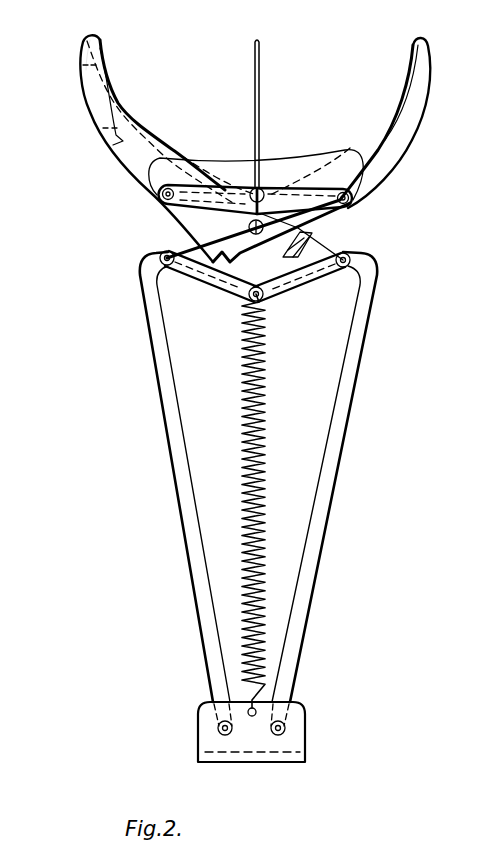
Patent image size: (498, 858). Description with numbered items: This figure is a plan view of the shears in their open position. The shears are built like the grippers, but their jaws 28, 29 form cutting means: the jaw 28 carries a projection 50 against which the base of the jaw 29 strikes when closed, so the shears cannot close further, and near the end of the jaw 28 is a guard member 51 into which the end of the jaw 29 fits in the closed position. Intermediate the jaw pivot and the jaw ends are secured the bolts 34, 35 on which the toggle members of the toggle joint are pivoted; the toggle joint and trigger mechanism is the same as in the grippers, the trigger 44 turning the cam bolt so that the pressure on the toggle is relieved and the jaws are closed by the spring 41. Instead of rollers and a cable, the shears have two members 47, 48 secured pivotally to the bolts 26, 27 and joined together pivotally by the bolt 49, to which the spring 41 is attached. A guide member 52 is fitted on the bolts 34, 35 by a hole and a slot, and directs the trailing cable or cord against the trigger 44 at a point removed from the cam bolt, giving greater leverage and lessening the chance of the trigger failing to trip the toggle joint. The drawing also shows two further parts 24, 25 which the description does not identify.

The handle member 24 is at (183, 505).
The handle member 25 is at (328, 458).
The bolt 26 is at (158, 253).
The bolt 27 is at (353, 258).
The jaw 28 is at (130, 165).
The jaw 29 is at (397, 137).
The bolt 34 is at (160, 193).
The bolt 35 is at (355, 200).
The spring 41 is at (243, 430).
The trigger 44 is at (262, 88).
The member 47 is at (217, 277).
The member 48 is at (293, 285).
The bolt 49 is at (263, 302).
The projection 50 is at (353, 208).
The guard member 51 is at (90, 85).
The guide member 52 is at (287, 170).